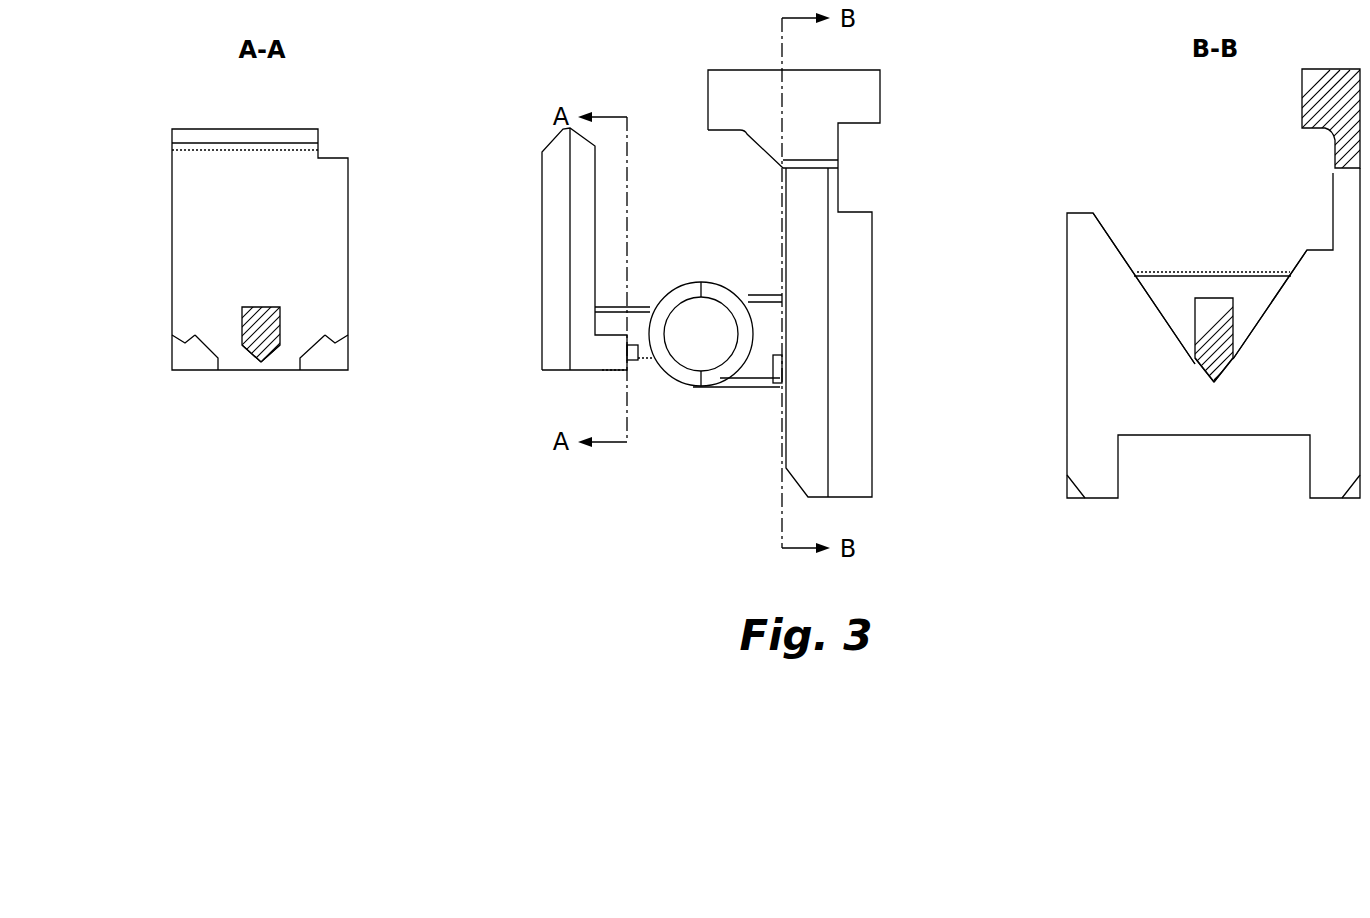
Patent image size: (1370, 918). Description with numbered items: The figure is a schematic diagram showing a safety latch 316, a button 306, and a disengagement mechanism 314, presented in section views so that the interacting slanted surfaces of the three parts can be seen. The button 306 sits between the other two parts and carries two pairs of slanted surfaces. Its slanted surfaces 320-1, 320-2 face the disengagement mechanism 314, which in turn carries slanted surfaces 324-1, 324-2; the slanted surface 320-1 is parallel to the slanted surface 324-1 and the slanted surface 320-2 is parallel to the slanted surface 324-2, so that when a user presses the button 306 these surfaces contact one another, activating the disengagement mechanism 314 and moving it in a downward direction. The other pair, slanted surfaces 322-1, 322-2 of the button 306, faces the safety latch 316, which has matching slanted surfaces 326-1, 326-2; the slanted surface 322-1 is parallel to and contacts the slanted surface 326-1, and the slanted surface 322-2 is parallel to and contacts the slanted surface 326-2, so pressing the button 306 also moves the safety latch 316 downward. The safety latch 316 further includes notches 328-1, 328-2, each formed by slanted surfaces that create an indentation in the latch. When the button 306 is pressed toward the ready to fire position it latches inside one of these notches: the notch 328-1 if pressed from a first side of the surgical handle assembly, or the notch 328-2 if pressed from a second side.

The button 306 is at (262, 296).
The disengagement mechanism 314 is at (864, 93).
The safety latch 316 is at (173, 355).
The slanted surface 320-1 is at (1197, 393).
The slanted surface 320-2 is at (1233, 393).
The slanted surface 322-1 is at (247, 368).
The slanted surface 322-2 is at (274, 368).
The slanted surface 324-1 is at (1168, 291).
The slanted surface 324-2 is at (1258, 291).
The slanted surface 326-1 is at (201, 362).
The slanted surface 326-2 is at (319, 362).
The notch 328-1 is at (182, 327).
The notch 328-2 is at (340, 327).